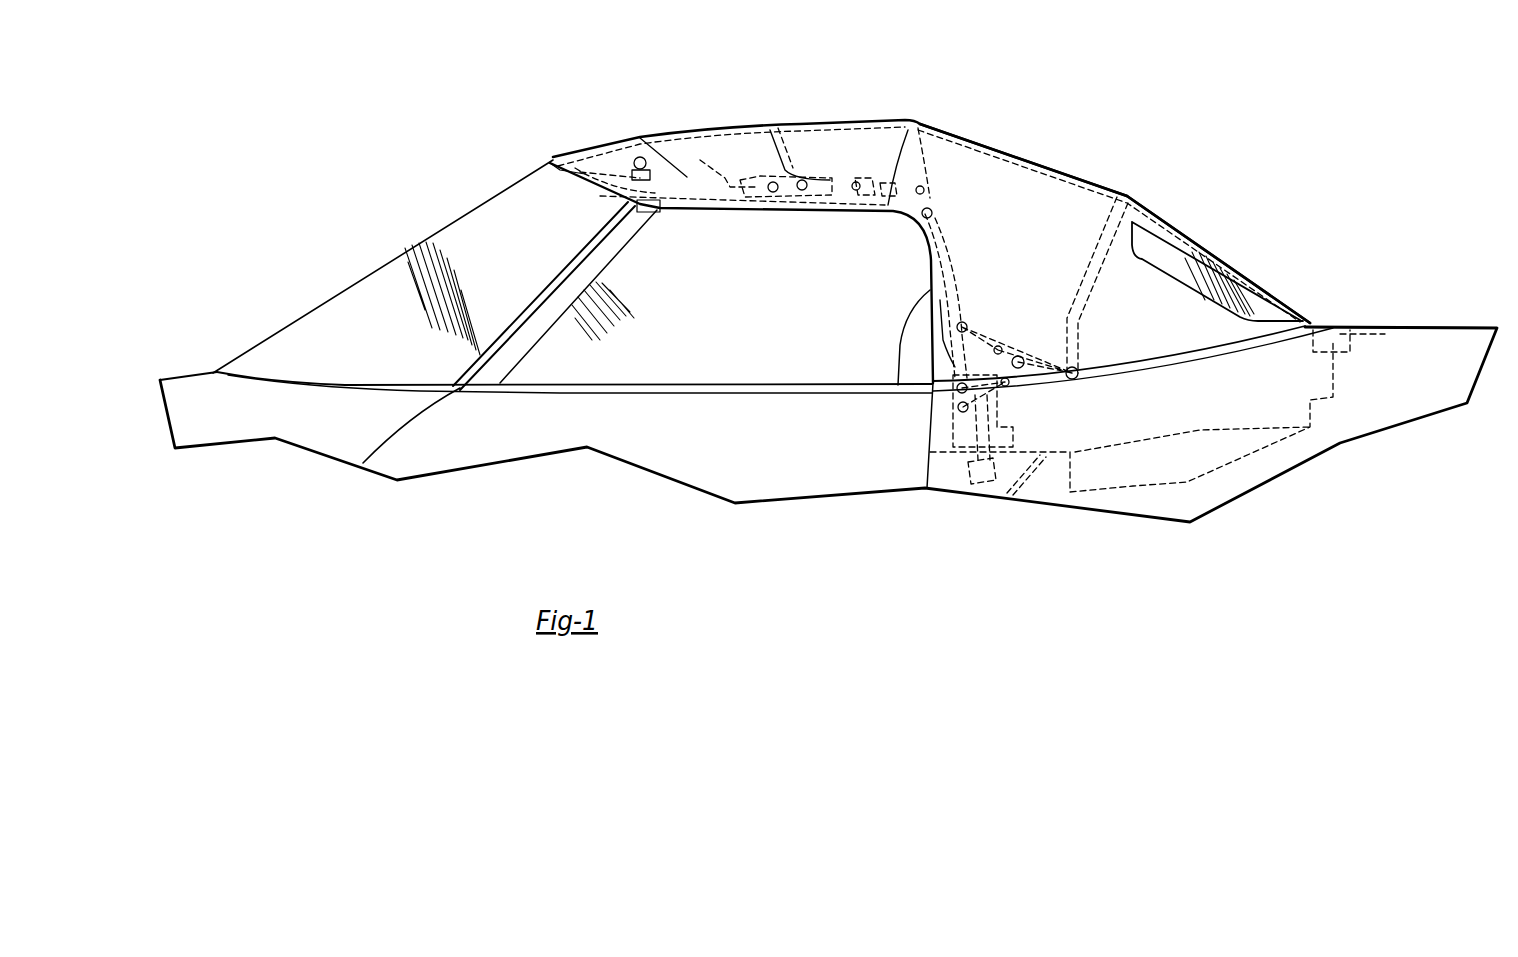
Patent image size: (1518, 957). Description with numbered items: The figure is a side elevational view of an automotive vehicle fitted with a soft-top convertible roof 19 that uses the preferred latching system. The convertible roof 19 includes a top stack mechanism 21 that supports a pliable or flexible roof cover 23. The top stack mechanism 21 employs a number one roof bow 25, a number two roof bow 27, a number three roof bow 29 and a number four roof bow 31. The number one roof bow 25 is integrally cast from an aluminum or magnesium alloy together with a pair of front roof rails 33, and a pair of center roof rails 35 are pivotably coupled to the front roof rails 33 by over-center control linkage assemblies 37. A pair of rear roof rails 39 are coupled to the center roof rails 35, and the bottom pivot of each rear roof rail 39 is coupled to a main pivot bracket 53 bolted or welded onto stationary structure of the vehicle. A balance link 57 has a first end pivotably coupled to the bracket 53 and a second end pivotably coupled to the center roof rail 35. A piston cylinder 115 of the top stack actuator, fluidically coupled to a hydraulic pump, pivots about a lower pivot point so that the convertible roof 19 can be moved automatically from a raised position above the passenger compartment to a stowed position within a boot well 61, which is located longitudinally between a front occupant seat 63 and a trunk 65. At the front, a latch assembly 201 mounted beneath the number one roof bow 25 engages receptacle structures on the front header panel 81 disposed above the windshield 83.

The soft-top convertible roof 19 is at (1213, 152).
The top stack mechanism 21 is at (935, 98).
The roof cover 23 is at (1043, 162).
The number one roof bow 25 is at (630, 147).
The number two roof bow 27 is at (770, 130).
The number three roof bow 29 is at (917, 159).
The number four roof bow 31 is at (1130, 195).
The front roof rail 33 is at (722, 197).
The center roof rail 35 is at (787, 209).
The over-center control linkage assembly 37 is at (752, 163).
The rear roof rail 39 is at (950, 321).
The main pivot bracket 53 is at (963, 428).
The balance link 57 is at (958, 298).
The boot well 61 is at (1225, 440).
The front occupant seat 63 is at (917, 306).
The trunk 65 is at (1403, 352).
The front header panel 81 is at (580, 172).
The windshield 83 is at (372, 290).
The piston cylinder 115 is at (970, 490).
The latch assembly 201 is at (668, 220).